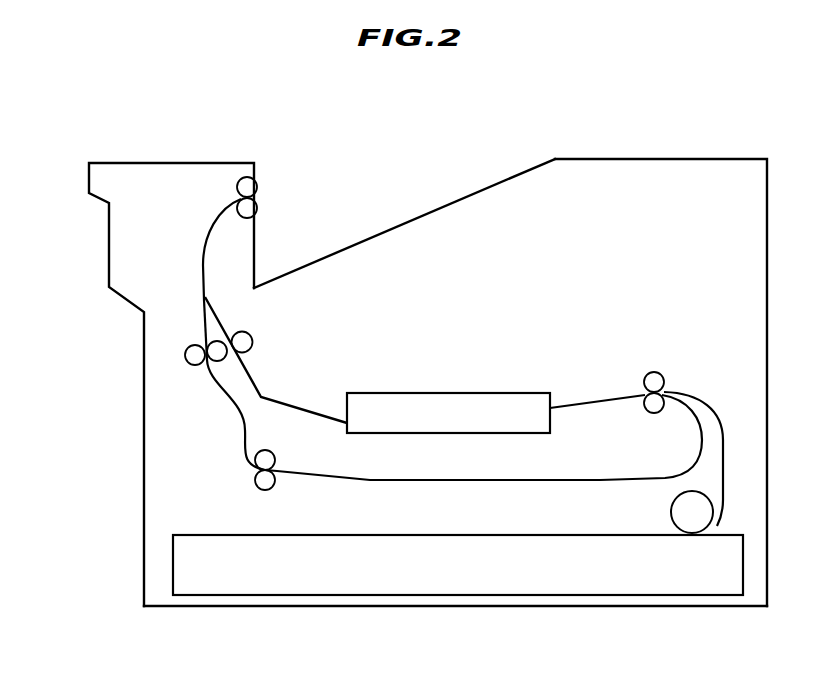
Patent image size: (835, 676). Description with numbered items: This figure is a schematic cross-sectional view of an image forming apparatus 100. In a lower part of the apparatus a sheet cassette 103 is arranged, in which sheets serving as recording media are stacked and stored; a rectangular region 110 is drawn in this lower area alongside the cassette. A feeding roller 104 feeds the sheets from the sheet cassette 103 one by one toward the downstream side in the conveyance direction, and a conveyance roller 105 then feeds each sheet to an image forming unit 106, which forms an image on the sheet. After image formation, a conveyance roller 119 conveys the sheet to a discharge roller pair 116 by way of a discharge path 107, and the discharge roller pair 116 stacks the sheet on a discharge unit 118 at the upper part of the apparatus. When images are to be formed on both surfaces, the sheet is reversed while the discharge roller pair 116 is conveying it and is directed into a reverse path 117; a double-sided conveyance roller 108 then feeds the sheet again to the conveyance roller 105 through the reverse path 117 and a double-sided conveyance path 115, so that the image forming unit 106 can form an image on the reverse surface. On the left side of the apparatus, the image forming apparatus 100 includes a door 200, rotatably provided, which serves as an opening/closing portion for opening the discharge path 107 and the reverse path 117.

The image forming apparatus 100 is at (664, 156).
The door 200 is at (123, 222).
The sheet cassette 103 is at (563, 583).
The feeding roller 104 is at (678, 512).
The conveyance roller 105 is at (657, 378).
The image forming unit 106 is at (433, 402).
The discharge path 107 is at (203, 256).
The double-sided conveyance roller 108 is at (262, 481).
The cassette 110 is at (157, 578).
The double-sided conveyance path 115 is at (353, 480).
The discharge roller pair 116 is at (251, 188).
The reverse path 117 is at (205, 320).
The discharge unit 118 is at (412, 220).
The conveyance roller 119 is at (220, 350).